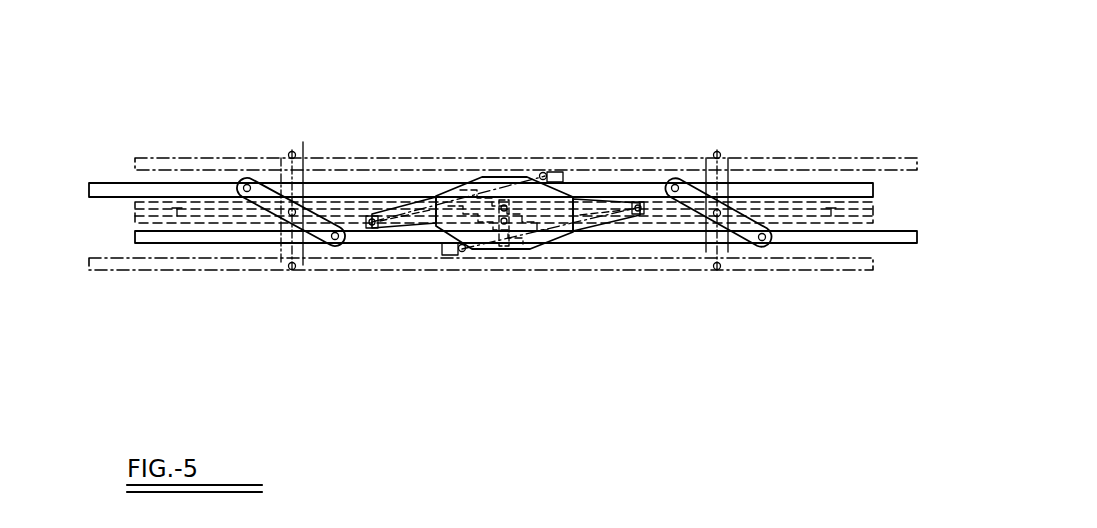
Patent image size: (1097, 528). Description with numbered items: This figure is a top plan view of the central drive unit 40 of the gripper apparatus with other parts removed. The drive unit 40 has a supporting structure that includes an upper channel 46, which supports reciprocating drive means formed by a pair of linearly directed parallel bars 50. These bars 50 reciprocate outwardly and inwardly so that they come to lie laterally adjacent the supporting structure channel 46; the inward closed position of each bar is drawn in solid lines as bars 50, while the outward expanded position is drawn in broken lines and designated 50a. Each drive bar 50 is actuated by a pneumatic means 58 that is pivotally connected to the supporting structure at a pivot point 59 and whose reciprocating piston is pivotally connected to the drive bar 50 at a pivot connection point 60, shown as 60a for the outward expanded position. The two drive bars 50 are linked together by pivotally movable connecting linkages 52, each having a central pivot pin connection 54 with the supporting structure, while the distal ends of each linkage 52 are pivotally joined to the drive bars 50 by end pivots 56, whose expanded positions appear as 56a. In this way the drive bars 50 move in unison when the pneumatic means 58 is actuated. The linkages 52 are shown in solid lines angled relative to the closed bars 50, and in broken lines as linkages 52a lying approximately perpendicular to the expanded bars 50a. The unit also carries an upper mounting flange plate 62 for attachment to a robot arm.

The central drive unit 40 is at (445, 125).
The upper channel 46 is at (132, 206).
The parallel bars 50 is at (98, 184).
The reciprocating bars in outward expanded position 50a is at (147, 158).
The connecting linkages 52 is at (258, 178).
The connecting linkages in expanded position 52a is at (283, 172).
The central pivot pin connection 54 is at (722, 210).
The end pivots 56 is at (244, 184).
The end pivots in expanded position 56a is at (292, 151).
The pneumatic means 58 is at (450, 197).
The pivot point 59 is at (370, 218).
The pivot connection point 60 is at (504, 198).
The pivot connection point in expanded position 60a is at (544, 173).
The upper mounting flange plate 62 is at (502, 250).